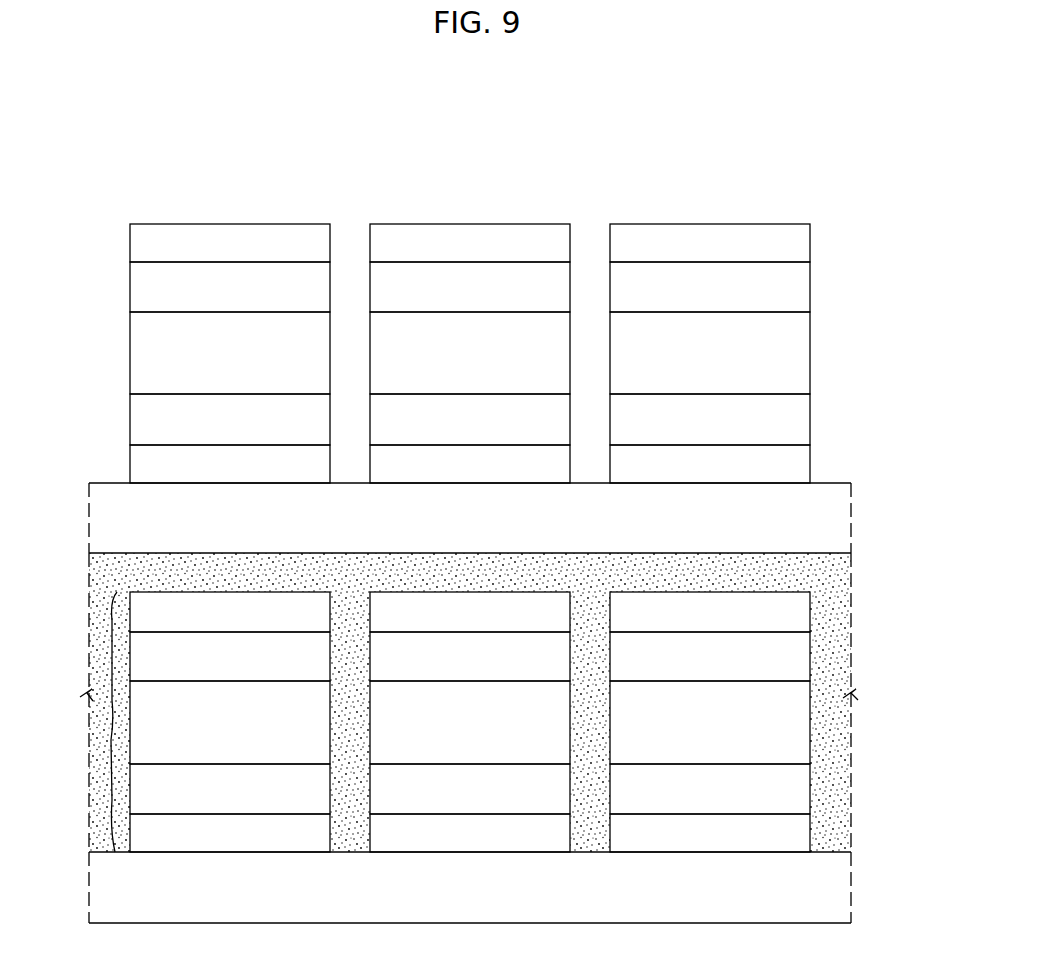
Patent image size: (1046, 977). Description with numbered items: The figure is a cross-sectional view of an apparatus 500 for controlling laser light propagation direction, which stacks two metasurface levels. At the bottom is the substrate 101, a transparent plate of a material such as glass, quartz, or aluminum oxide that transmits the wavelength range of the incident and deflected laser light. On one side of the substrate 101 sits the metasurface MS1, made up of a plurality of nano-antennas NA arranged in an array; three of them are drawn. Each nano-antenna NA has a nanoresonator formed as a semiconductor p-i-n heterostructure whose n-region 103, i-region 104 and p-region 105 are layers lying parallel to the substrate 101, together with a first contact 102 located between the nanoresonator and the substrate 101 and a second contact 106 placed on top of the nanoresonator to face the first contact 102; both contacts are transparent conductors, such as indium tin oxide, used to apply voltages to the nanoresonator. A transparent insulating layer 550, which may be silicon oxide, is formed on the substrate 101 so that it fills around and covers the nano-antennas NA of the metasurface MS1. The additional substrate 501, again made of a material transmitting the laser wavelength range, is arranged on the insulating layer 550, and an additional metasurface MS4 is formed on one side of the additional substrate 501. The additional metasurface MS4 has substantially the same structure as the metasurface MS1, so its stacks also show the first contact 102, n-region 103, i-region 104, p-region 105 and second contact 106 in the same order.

The apparatus for controlling laser light propagation direction 500 is at (846, 183).
The additional substrate 501 is at (125, 529).
The substrate 101 is at (125, 897).
The first contact 102 is at (210, 472).
The n-region 103 is at (210, 427).
The i-region 104 is at (210, 362).
The p-region 105 is at (210, 297).
The second contact 106 is at (210, 256).
The insulating layer 550 is at (836, 651).
The additional metasurface MS4 is at (832, 352).
The metasurface MS1 is at (870, 712).
The nano-antenna NA is at (112, 723).